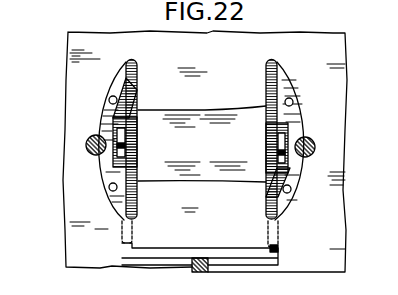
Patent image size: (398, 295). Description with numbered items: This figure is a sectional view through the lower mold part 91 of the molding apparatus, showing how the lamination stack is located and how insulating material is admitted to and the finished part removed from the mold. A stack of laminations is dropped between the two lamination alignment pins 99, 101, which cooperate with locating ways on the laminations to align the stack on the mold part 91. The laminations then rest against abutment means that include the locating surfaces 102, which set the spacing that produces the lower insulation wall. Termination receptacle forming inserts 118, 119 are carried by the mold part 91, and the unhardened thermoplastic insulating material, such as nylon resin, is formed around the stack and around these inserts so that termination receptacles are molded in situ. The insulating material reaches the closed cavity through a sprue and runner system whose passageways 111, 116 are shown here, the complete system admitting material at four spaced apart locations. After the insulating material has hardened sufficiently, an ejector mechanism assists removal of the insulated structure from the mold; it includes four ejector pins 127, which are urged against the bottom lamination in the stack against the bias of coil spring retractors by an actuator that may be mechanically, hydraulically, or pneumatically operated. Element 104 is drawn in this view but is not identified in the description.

The mold part 91 is at (347, 192).
The plate 104 is at (92, 45).
The locating surfaces 102 is at (105, 110).
The termination receptacle forming insert 118 is at (126, 146).
The termination receptacle forming insert 119 is at (267, 146).
The ejector pins 127 is at (111, 96).
The lamination alignment pin 99 is at (90, 151).
The lamination alignment pin 101 is at (313, 145).
The passageway 116 is at (133, 235).
The passageway 111 is at (200, 268).